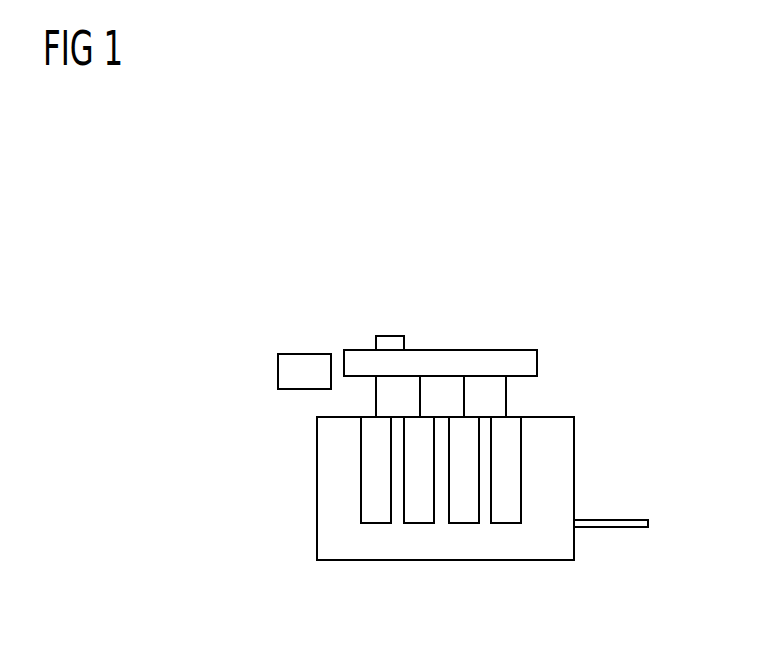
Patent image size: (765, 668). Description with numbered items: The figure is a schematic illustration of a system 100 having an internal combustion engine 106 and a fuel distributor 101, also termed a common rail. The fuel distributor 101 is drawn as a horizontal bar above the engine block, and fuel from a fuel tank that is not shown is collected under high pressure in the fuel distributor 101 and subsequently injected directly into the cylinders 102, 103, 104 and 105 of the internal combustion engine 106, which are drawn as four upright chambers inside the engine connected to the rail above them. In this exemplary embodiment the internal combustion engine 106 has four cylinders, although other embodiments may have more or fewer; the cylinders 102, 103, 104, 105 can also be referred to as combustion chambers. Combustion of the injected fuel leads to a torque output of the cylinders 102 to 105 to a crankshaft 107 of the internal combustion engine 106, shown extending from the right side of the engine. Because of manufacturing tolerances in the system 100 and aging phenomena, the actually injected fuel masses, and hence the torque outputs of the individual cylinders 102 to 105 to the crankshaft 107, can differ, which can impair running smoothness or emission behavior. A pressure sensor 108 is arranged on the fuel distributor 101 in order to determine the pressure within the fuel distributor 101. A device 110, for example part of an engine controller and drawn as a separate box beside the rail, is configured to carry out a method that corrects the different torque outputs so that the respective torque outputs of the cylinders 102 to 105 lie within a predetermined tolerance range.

The system 100 is at (580, 258).
The fuel distributor 101 is at (510, 350).
The cylinder 102 is at (368, 523).
The cylinder 103 is at (422, 523).
The cylinder 104 is at (462, 523).
The cylinder 105 is at (503, 523).
The internal combustion engine 106 is at (317, 503).
The crankshaft 107 is at (609, 528).
The pressure sensor 108 is at (389, 336).
The device 110 is at (303, 354).